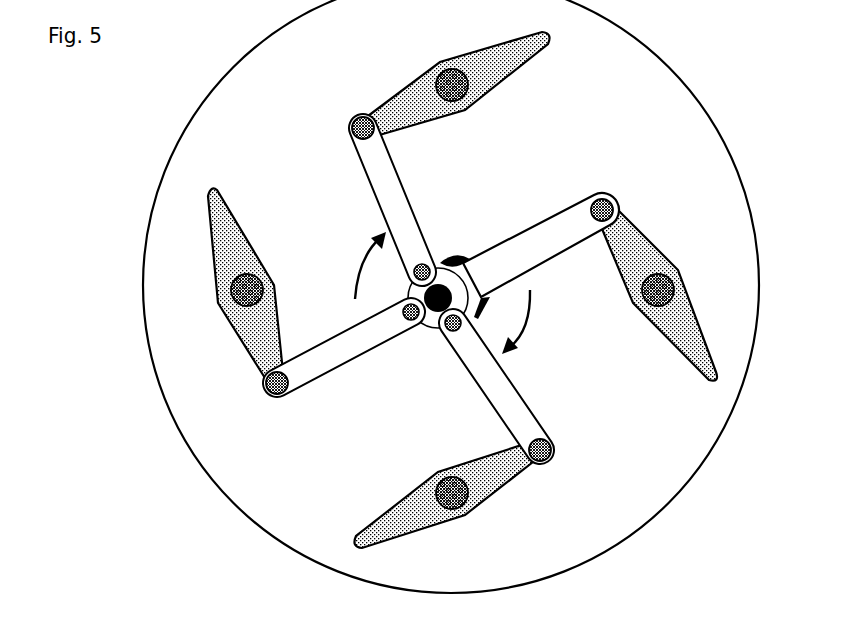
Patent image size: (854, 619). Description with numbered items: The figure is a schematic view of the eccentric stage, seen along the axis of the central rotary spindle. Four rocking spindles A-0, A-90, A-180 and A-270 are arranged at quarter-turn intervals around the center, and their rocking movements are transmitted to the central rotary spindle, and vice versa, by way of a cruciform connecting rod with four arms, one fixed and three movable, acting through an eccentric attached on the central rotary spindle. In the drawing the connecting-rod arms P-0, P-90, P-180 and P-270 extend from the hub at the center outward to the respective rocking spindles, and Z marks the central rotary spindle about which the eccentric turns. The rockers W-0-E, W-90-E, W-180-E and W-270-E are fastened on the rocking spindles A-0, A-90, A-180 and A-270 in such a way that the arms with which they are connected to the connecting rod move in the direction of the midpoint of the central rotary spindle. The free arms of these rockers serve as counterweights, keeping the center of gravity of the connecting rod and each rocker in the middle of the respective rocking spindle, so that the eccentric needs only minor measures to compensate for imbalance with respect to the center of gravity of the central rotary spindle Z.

The rocking spindle A-0 is at (459, 74).
The rocking spindle A-90 is at (673, 292).
The rocking spindle A-180 is at (443, 501).
The rocking spindle A-270 is at (220, 283).
The pivot link P at 0 degree position P-0 is at (406, 204).
The pivot link P at 90 degree position P-90 is at (541, 244).
The pivot link P at 180 degree position P-180 is at (482, 382).
The pivot link P at 270 degree position P-270 is at (348, 353).
The rocker W-0-E is at (357, 100).
The rocker W-90-E is at (668, 220).
The rocker W-180-E is at (543, 485).
The rocker W-270-E is at (247, 400).
The central rotation axis Z is at (465, 273).